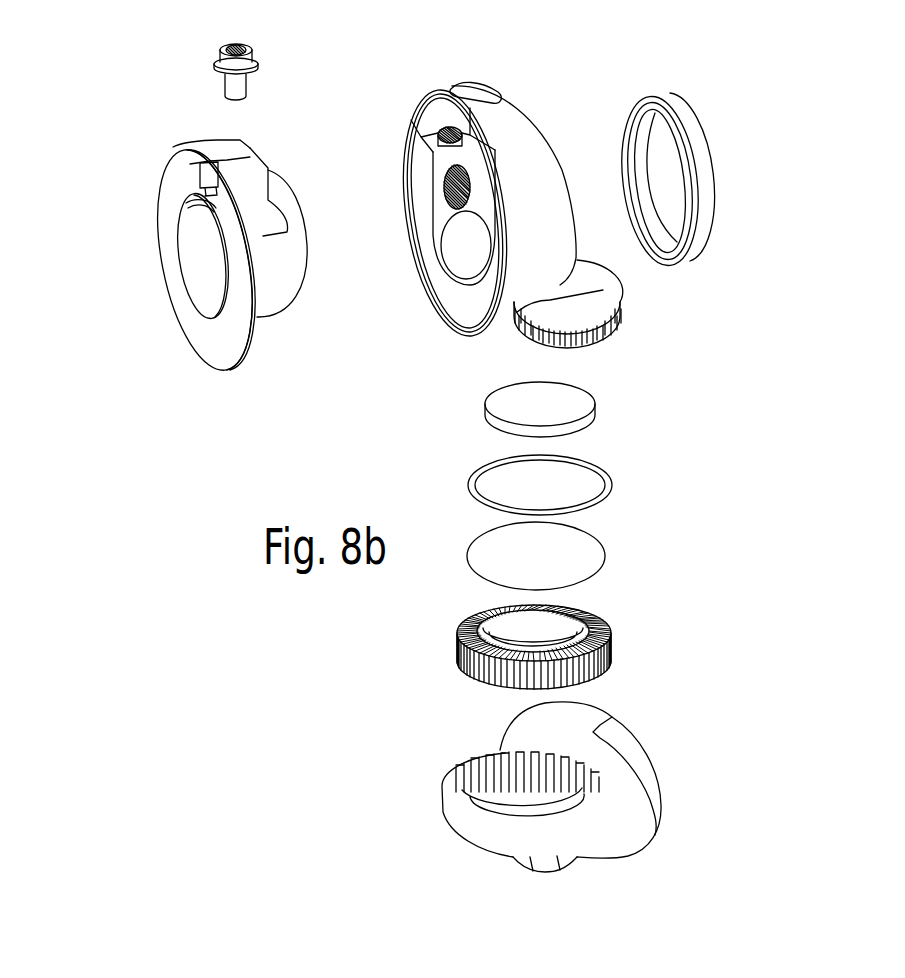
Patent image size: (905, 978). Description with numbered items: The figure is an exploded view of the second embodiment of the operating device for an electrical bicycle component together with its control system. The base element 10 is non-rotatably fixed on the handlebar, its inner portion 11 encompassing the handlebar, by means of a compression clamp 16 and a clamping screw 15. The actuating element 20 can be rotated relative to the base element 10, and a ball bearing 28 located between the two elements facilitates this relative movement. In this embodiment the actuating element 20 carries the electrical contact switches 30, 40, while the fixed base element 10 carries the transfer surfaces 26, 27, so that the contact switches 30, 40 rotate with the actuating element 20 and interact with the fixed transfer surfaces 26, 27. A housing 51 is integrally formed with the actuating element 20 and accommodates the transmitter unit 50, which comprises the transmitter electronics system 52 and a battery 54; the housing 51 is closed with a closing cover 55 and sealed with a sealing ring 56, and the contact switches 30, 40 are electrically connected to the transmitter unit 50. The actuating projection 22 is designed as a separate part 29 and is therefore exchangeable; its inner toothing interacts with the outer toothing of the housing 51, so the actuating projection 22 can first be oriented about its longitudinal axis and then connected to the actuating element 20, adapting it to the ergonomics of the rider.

The base element 10 is at (228, 235).
The inner portion 11 is at (202, 273).
The clamping screw 15 is at (233, 83).
The compression clamp 16 is at (203, 192).
The transfer surface 26 is at (270, 243).
The transfer surface 27 is at (203, 137).
The actuating element 20 is at (521, 182).
The electrical contact switch 40 is at (440, 135).
The electrical contact switch 30 is at (497, 203).
The housing 51 is at (608, 303).
The ball bearing 28 is at (700, 233).
The transmitter unit 50 is at (608, 535).
The transmitter electronics system 52 is at (578, 398).
The sealing ring 56 is at (605, 472).
The battery 54 is at (590, 563).
The closing cover 55 is at (608, 652).
The separate part 29 is at (653, 780).
The actuating projection 22 is at (614, 787).